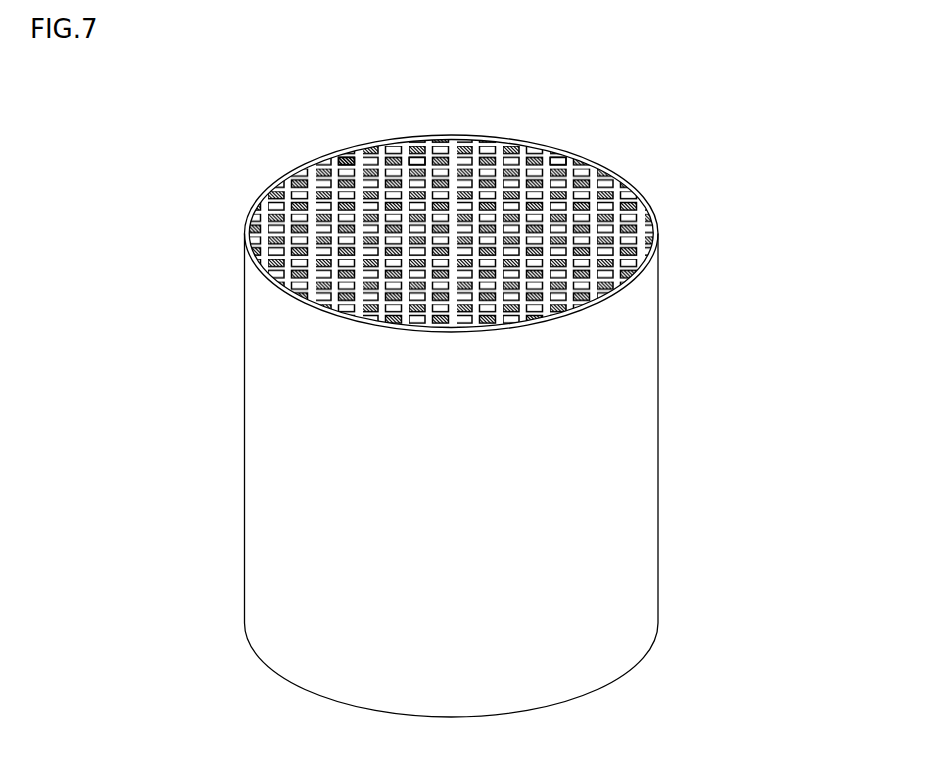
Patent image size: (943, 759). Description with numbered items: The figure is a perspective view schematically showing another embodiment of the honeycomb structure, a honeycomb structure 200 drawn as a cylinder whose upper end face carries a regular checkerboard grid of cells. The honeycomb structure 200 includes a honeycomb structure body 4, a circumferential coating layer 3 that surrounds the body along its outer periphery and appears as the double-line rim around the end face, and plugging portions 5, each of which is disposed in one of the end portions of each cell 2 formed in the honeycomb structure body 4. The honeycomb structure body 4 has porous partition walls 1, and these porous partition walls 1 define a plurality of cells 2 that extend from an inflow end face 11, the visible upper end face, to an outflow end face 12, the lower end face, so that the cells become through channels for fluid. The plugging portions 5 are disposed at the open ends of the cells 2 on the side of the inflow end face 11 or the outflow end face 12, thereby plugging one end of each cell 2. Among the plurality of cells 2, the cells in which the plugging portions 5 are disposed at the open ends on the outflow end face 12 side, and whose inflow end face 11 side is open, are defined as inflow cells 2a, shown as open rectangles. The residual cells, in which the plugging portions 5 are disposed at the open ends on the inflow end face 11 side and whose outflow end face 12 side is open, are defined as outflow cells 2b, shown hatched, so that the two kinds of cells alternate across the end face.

The porous partition wall 1 is at (500, 155).
The cell 2 is at (452, 204).
The inflow cell 2a is at (418, 157).
The outflow cell 2b is at (347, 157).
The circumferential coating layer 3 is at (633, 307).
The honeycomb structure body 4 is at (663, 420).
The plugging portion 5 is at (563, 162).
The inflow end face 11 is at (258, 192).
The outflow end face 12 is at (258, 658).
The honeycomb structure 200 is at (728, 77).